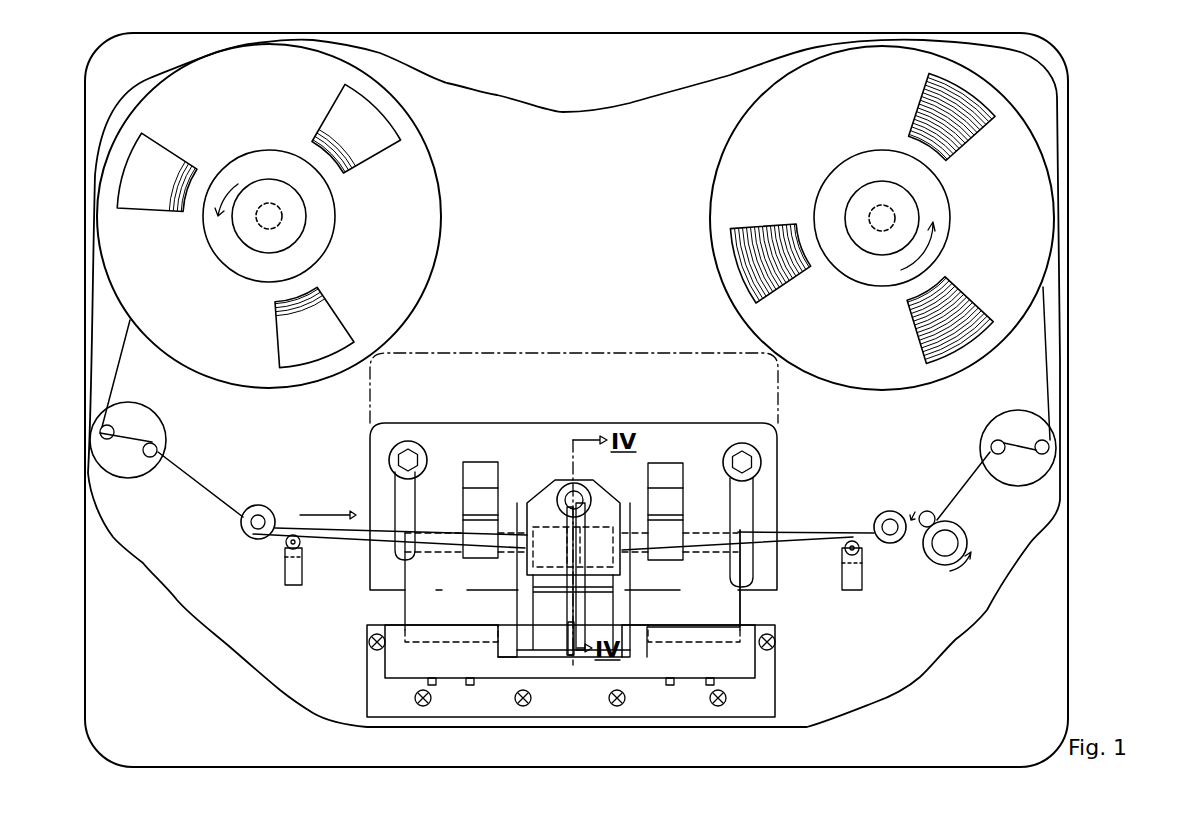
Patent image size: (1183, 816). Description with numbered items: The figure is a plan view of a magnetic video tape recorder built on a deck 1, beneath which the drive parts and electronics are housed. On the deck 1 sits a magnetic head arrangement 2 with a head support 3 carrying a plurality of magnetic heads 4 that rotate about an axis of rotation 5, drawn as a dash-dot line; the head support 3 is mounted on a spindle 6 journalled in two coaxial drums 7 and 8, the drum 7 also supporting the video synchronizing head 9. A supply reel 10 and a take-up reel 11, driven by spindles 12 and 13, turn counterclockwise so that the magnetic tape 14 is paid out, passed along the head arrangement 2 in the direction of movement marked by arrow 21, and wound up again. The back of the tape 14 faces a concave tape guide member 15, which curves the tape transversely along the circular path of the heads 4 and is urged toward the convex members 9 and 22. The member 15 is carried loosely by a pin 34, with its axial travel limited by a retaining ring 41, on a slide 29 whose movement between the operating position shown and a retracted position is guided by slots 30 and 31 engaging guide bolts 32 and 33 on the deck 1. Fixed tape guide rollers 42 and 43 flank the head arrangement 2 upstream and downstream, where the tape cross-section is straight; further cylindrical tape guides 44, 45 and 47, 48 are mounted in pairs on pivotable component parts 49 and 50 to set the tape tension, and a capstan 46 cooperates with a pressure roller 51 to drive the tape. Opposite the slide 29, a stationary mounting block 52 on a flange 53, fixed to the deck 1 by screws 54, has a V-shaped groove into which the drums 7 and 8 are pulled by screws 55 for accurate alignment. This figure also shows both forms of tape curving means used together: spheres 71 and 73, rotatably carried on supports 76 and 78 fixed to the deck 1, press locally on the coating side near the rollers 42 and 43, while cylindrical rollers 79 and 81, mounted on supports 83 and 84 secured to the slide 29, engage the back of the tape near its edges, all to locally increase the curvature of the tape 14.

The deck 1 is at (1028, 352).
The magnetic head arrangement 2 is at (788, 624).
The head support 3 is at (583, 613).
The magnetic heads 4 is at (572, 636).
The axis of rotation 5 is at (655, 590).
The spindle 6 is at (568, 600).
The drum 7 is at (425, 600).
The drum 8 is at (728, 608).
The video synchronizing head 9 is at (520, 657).
The supply reel 10 is at (423, 197).
The take-up reel 11 is at (733, 177).
The spindle 12 is at (282, 210).
The spindle 13 is at (893, 210).
The magnetic tape 14 is at (205, 485).
The concave tape guide member 15 is at (605, 498).
The arrow 21 is at (320, 513).
The convex tape guide member 22 is at (625, 652).
The slide 29 is at (658, 437).
The slot 30 is at (407, 497).
The slot 31 is at (743, 495).
The guide bolt 32 is at (410, 447).
The guide bolt 33 is at (745, 448).
The pin 34 is at (563, 492).
The retaining ring 41 is at (575, 490).
The tape guide roller 42 is at (250, 536).
The tape guide roller 43 is at (895, 545).
The cylindrical tape guide 44 is at (110, 424).
The cylindrical tape guide 45 is at (160, 447).
The capstan 46 is at (926, 509).
The cylindrical tape guide 47 is at (990, 447).
The cylindrical tape guide 48 is at (1040, 440).
The component part 49 is at (150, 425).
The component part 50 is at (1006, 423).
The pressure roller 51 is at (948, 540).
The mounting block 52 is at (393, 661).
The flange 53 is at (776, 700).
The screws 54 is at (612, 704).
The screws 55 is at (470, 687).
The sphere 71 is at (285, 546).
The sphere 73 is at (860, 551).
The support 76 is at (293, 578).
The support 78 is at (855, 592).
The cylindrical roller 79 is at (477, 550).
The cylindrical roller 81 is at (670, 553).
The support 83 is at (478, 470).
The support 84 is at (670, 475).